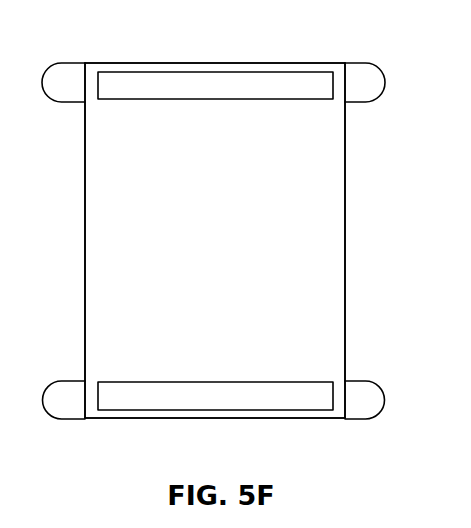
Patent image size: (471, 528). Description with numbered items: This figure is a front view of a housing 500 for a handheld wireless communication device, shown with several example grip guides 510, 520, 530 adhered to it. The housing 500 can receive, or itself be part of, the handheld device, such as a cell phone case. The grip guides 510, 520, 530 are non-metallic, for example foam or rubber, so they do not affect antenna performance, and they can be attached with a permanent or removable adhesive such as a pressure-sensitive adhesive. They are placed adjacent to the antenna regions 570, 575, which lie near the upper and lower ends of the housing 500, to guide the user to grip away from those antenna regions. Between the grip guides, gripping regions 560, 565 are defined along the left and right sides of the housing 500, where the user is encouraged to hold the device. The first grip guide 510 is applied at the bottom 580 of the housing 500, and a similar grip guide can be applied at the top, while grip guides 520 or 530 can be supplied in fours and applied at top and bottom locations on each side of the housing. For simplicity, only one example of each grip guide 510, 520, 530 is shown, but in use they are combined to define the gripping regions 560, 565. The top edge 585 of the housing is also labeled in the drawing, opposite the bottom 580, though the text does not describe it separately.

The device / package body 500 is at (215, 63).
The bottom-right tab 510 is at (389, 390).
The top-right tab 520 is at (385, 70).
The top-left tab 530 is at (48, 62).
The left side edge 560 is at (97, 240).
The right side edge 565 is at (346, 240).
The top inner window 570 is at (137, 72).
The bottom inner window 575 is at (283, 410).
The bottom edge 580 is at (127, 421).
The top edge 585 is at (302, 63).